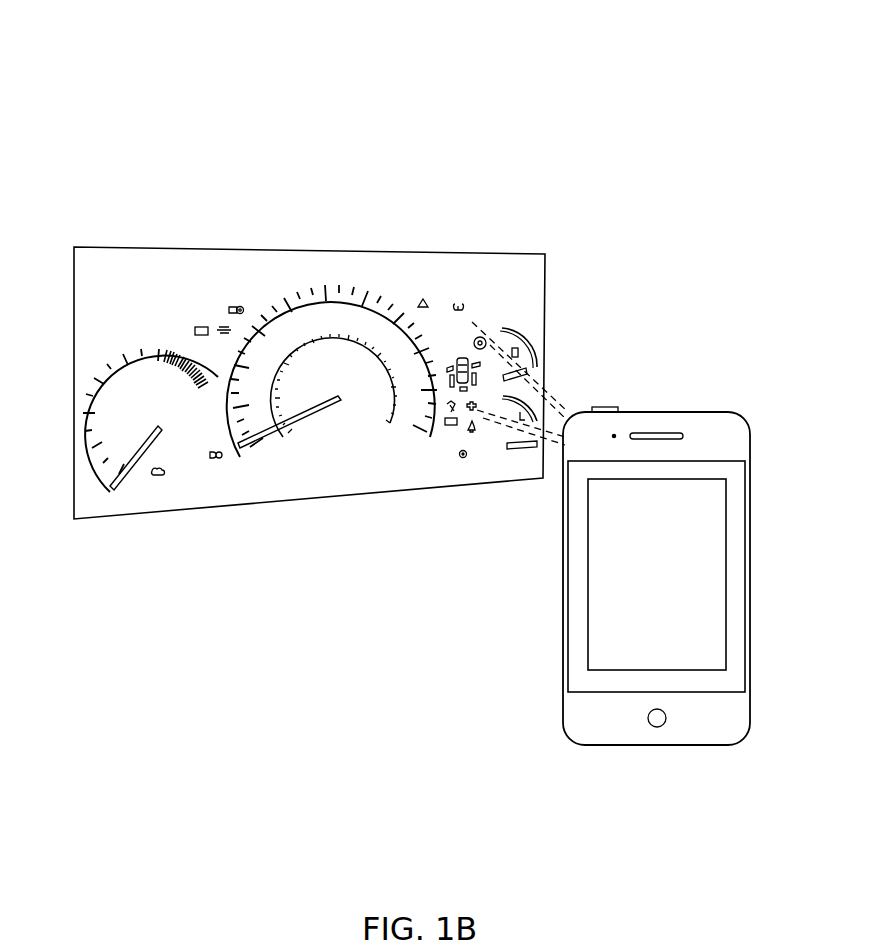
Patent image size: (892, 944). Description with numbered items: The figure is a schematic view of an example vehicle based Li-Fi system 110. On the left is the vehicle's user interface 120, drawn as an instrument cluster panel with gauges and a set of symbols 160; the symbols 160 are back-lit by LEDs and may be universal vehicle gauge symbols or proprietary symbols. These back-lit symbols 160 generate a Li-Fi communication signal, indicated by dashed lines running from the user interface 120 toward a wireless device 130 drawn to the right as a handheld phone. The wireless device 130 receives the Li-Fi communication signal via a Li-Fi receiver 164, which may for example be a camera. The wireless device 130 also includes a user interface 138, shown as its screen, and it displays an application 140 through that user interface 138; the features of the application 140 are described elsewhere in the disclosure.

The vehicle based Li-Fi system 110 is at (294, 116).
The user interface 120 is at (160, 248).
The wireless device 130 is at (713, 745).
The user interface 138 is at (740, 637).
The application 140 is at (727, 577).
The symbols 160 is at (237, 308).
The Li-Fi receiver 164 is at (745, 495).